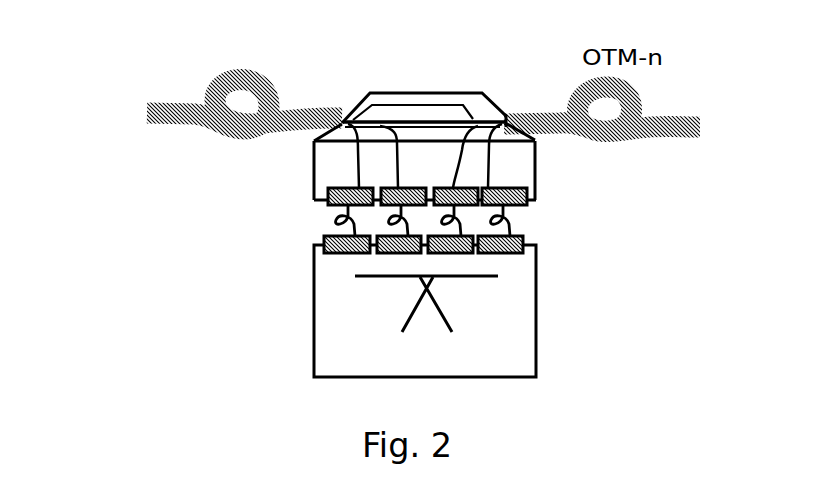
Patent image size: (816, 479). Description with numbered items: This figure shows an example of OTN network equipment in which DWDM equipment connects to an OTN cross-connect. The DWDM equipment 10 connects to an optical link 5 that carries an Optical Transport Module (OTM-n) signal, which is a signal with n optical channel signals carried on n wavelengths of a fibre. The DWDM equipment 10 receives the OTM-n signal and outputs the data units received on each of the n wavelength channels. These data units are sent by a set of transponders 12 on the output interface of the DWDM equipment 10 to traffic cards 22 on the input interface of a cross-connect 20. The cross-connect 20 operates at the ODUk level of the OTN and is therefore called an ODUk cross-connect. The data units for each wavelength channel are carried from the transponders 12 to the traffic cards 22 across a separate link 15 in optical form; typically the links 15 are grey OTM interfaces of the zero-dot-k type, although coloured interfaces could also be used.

The optical link 5 is at (178, 110).
The DWDM equipment 10 is at (342, 120).
The transponders 12 is at (327, 202).
The link 15 is at (507, 222).
The cross-connect 20 is at (313, 315).
The traffic cards 22 is at (323, 240).